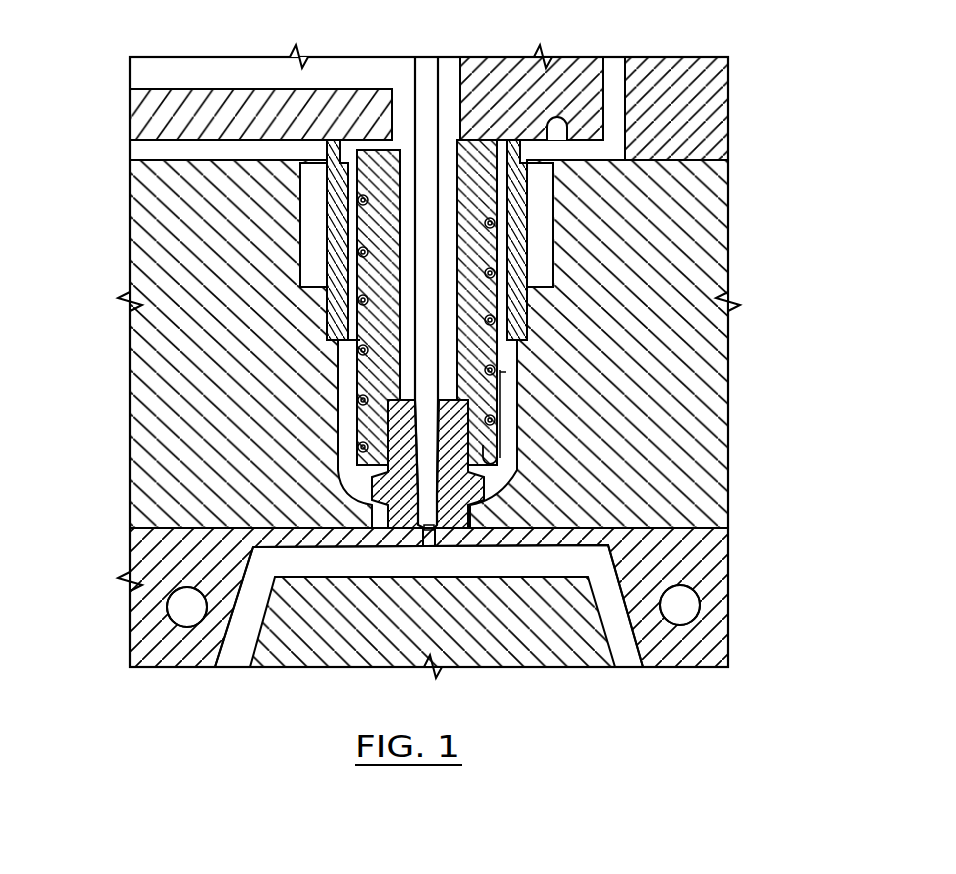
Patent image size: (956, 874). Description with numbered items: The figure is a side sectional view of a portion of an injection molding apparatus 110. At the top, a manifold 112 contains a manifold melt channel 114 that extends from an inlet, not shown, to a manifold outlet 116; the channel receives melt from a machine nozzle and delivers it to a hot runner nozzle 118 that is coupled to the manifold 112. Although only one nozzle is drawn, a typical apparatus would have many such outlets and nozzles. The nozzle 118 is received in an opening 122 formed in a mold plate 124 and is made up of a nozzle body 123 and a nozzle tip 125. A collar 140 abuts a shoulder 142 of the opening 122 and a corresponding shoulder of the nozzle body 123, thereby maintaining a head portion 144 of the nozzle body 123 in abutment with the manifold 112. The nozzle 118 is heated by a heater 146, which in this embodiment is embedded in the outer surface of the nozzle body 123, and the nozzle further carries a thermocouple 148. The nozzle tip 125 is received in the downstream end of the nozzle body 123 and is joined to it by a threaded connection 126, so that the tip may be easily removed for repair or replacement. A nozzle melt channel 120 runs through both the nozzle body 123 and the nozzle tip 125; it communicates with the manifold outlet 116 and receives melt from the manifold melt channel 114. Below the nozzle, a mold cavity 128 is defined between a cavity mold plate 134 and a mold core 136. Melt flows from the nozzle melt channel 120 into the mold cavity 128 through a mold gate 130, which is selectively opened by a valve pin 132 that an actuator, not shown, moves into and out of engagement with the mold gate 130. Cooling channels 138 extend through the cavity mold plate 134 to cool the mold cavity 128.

The injection molding apparatus 110 is at (714, 40).
The manifold 112 is at (498, 75).
The manifold melt channel 114 is at (143, 72).
The manifold outlet 116 is at (398, 150).
The hot runner nozzle 118 is at (364, 372).
The nozzle melt channel 120 is at (447, 306).
The opening 122 is at (508, 358).
The nozzle body 123 is at (492, 390).
The mold plate 124 is at (700, 250).
The nozzle tip 125 is at (487, 476).
The threaded connection 126 is at (500, 437).
The mold cavity 128 is at (607, 563).
The mold gate 130 is at (432, 532).
The valve pin 132 is at (414, 428).
The cavity mold plate 134 is at (167, 562).
The mold core 136 is at (273, 653).
The cooling channels 138 is at (168, 617).
The collar 140 is at (322, 215).
The shoulder 142 is at (330, 340).
The head portion 144 is at (553, 167).
The heater 146 is at (492, 228).
The thermocouple 148 is at (485, 467).